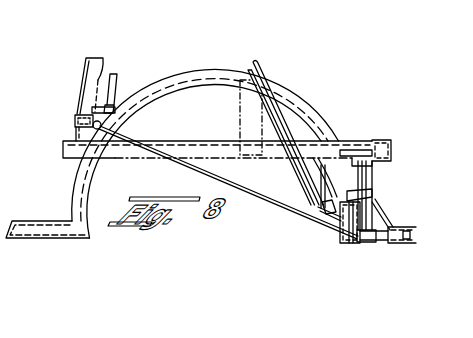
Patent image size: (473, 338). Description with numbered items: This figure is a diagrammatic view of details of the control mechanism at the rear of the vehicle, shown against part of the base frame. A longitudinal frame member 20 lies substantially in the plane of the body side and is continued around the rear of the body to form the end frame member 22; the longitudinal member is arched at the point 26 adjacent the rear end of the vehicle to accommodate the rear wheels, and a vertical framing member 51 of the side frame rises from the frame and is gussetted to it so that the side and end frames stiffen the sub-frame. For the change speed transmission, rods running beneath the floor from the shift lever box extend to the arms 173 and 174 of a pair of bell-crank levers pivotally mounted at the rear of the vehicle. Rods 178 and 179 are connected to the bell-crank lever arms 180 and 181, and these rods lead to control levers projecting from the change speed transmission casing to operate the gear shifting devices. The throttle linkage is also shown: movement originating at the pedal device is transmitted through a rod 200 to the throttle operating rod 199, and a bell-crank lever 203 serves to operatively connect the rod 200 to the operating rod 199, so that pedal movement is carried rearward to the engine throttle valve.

The longitudinal frame member 20 is at (414, 238).
The end frame member 22 is at (27, 219).
The arched portion 26 is at (298, 107).
The vertical framing member 51 is at (126, 7).
The bell-crank lever arm 173 is at (350, 215).
The bell-crank lever arm 174 is at (355, 226).
The rod 178 is at (247, 77).
The rod 179 is at (262, 77).
The bell-crank lever arm 180 is at (350, 196).
The bell-crank lever arm 181 is at (342, 190).
The throttle operating rod 199 is at (116, 78).
The rod 200 is at (243, 187).
The bell-crank lever 203 is at (93, 121).